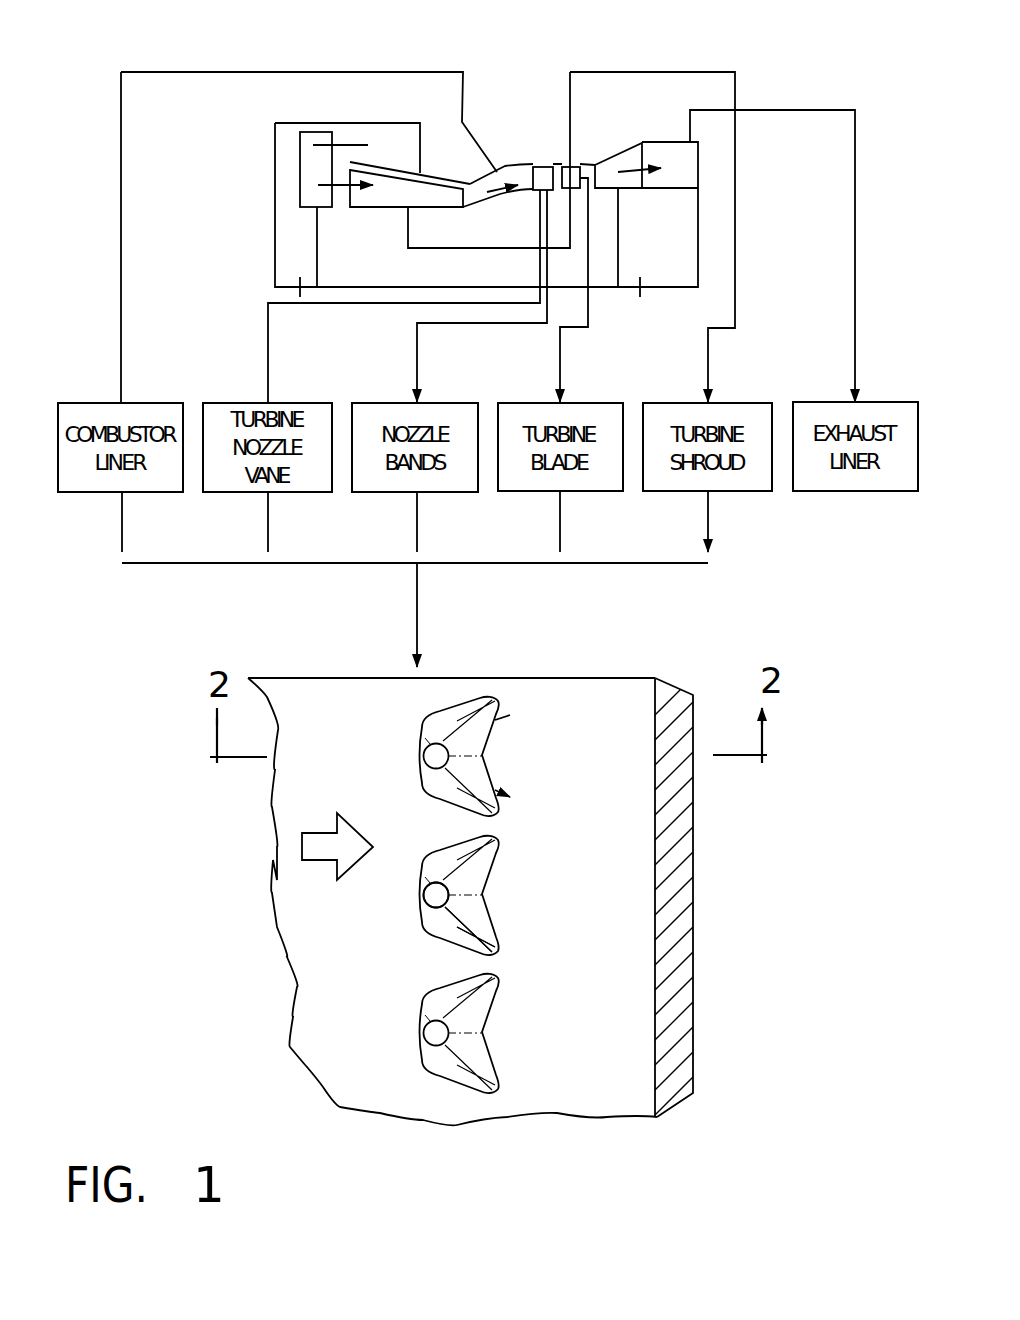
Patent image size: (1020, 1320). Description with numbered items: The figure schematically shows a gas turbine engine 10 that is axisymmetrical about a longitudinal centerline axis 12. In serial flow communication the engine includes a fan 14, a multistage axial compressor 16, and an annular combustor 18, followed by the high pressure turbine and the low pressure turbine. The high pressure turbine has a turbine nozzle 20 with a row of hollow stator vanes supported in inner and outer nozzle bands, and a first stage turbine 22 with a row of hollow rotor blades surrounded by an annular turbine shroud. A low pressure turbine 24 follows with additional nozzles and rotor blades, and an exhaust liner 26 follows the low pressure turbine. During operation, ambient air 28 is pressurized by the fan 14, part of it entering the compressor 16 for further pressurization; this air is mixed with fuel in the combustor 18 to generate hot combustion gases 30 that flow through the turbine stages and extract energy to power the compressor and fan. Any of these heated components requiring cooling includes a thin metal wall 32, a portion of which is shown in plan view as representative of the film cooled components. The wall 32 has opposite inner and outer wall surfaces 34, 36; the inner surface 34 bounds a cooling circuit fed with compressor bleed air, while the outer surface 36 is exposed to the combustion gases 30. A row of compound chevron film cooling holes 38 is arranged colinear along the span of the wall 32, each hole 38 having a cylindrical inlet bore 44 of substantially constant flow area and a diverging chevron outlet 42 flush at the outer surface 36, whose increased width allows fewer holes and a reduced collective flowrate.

The gas turbine engine 10 is at (156, 68).
The centerline axis 12 is at (408, 287).
The fan 14 is at (300, 170).
The multistage axial compressor 16 is at (398, 195).
The annular combustor 18 is at (493, 176).
The turbine nozzle 20 is at (545, 167).
The first stage turbine 22 is at (567, 166).
The low pressure turbine 24 is at (626, 189).
The exhaust liner 26 is at (653, 141).
The ambient air 28 is at (345, 143).
The hot combustion gases 30 is at (507, 202).
The wall 32 is at (600, 678).
The inner wall surface 34 is at (695, 858).
The outer wall surface 36 is at (613, 919).
The film cooling hole 38 is at (410, 720).
The chevron outlet 42 is at (457, 942).
The inlet bore 44 is at (424, 902).